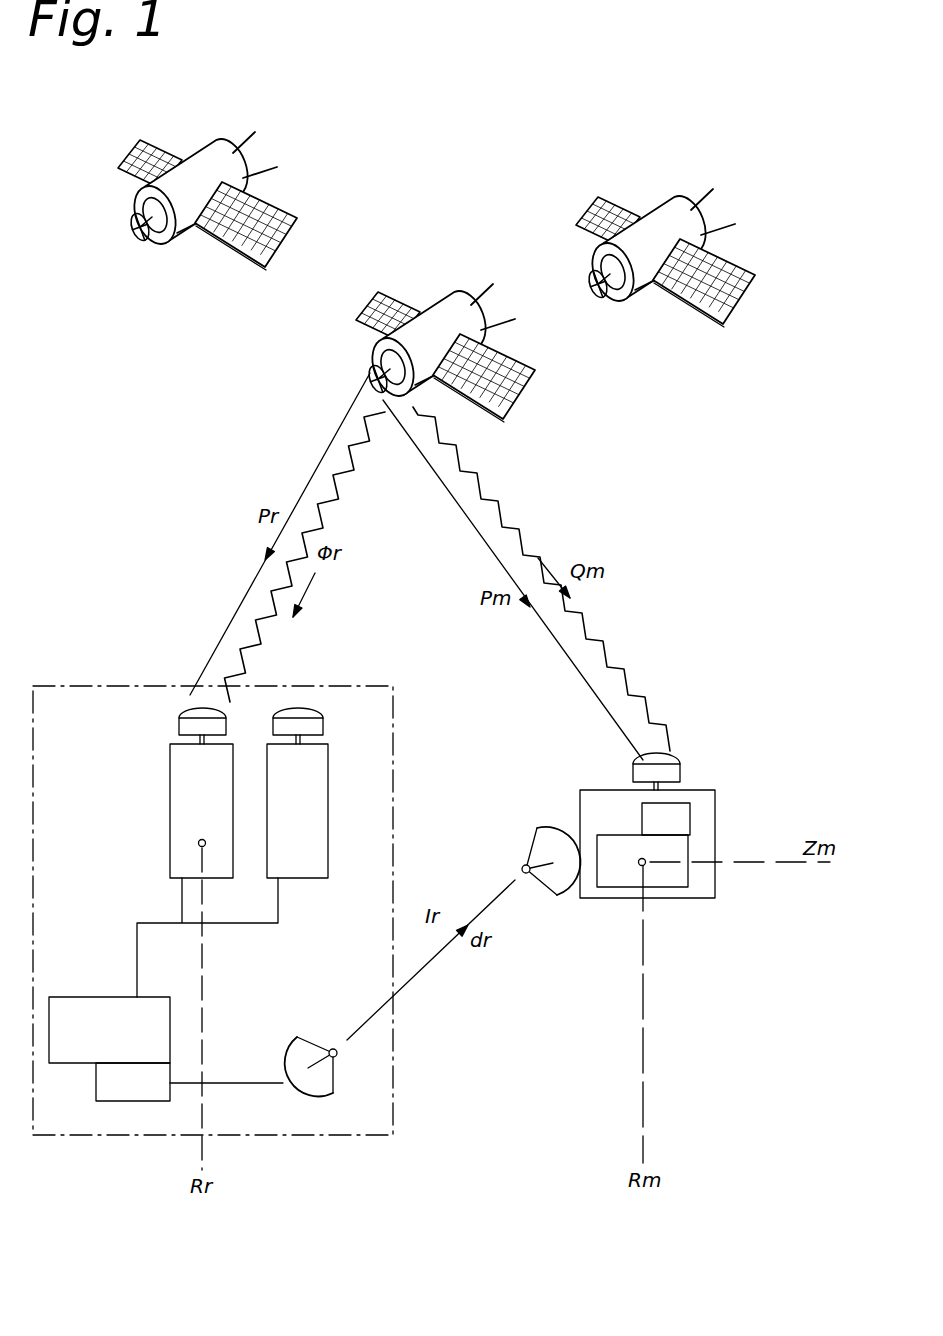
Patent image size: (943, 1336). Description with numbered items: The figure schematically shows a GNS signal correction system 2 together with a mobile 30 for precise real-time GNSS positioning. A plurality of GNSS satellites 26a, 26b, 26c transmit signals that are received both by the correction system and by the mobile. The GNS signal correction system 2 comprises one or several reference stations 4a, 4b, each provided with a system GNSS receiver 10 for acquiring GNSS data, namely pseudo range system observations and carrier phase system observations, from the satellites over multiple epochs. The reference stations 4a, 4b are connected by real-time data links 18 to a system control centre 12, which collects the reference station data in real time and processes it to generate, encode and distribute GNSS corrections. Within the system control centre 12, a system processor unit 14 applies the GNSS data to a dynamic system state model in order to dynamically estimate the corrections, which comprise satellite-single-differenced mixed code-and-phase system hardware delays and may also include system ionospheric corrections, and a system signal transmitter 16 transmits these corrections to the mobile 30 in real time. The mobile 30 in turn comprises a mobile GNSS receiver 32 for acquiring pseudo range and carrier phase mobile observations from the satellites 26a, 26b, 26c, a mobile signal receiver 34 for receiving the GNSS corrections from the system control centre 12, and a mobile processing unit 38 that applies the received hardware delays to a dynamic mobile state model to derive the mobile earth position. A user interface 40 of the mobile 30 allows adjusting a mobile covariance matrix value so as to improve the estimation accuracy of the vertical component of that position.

The GNS signal correction system 2 is at (100, 666).
The reference station 4a is at (190, 800).
The reference station 4b is at (308, 773).
The system GNSS receiver 10 is at (283, 727).
The system control centre 12 is at (78, 1008).
The system processor unit 14 is at (100, 1088).
The system signal transmitter 16 is at (297, 1038).
The real-time data links 18 is at (246, 924).
The GNSS satellite 26a is at (190, 165).
The GNSS satellite 26b is at (428, 340).
The GNSS satellite 26c is at (663, 228).
The mobile 30 is at (583, 766).
The mobile GNSS receiver 32 is at (673, 770).
The mobile signal receiver 34 is at (548, 833).
The mobile processing unit 38 is at (622, 873).
The user interface 40 is at (677, 817).